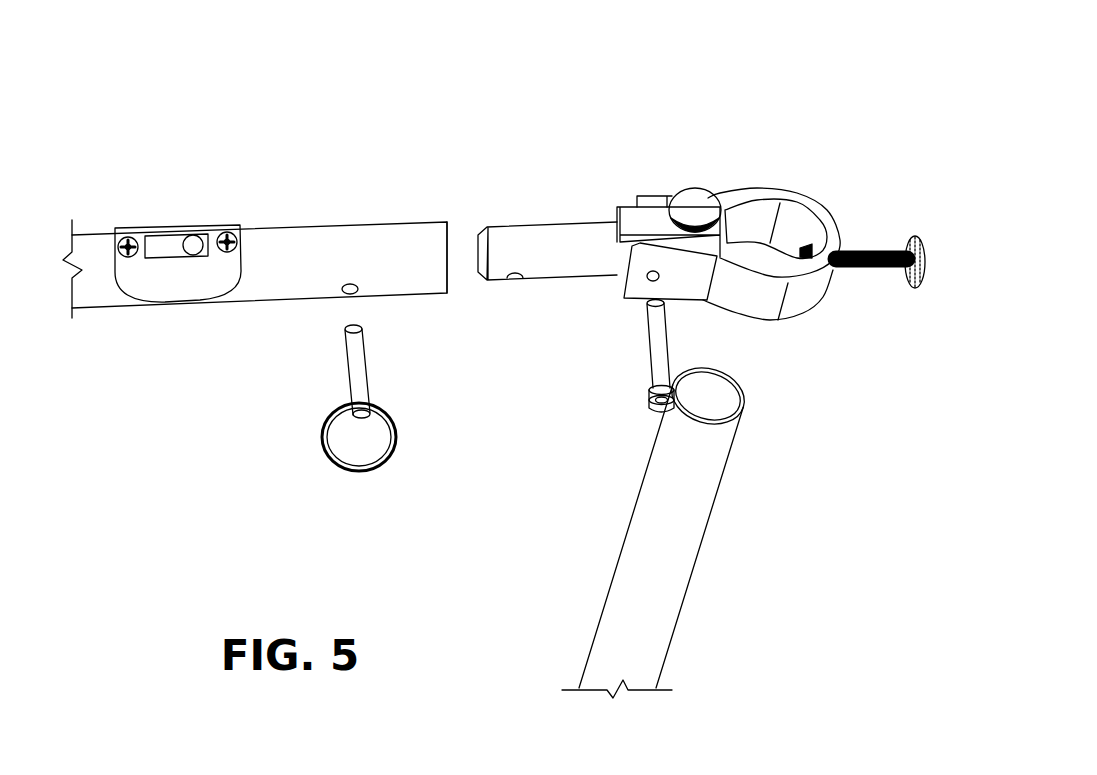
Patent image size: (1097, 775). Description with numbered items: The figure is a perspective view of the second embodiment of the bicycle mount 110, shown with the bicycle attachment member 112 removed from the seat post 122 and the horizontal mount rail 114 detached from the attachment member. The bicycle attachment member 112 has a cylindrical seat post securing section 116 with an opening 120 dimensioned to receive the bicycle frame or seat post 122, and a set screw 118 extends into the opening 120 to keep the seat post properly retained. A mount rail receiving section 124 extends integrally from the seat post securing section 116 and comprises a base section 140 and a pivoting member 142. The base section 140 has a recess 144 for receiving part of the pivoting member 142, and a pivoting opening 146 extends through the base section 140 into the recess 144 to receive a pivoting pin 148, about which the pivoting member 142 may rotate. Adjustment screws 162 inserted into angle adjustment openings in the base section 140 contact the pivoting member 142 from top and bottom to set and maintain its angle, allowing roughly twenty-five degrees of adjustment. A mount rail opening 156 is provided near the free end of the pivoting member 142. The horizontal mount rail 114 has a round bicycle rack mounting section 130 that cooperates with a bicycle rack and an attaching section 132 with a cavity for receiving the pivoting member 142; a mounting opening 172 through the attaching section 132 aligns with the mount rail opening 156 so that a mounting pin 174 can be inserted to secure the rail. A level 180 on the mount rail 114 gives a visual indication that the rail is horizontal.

The bicycle mount 110 is at (692, 103).
The bicycle attachment member 112 is at (832, 195).
The horizontal mount rail 114 is at (296, 222).
The seat post securing section 116 is at (775, 187).
The set screw 118 is at (920, 290).
The opening 120 is at (810, 230).
The seat post 122 is at (668, 593).
The mount rail receiving section 124 is at (651, 205).
The bicycle rack mounting section 130 is at (105, 318).
The attaching section 132 is at (378, 232).
The base section 140 is at (683, 300).
The pivoting member 142 is at (557, 232).
The recess 144 is at (640, 236).
The pivoting opening 146 is at (649, 280).
The pivoting pin 148 is at (649, 353).
The mount rail opening 156 is at (514, 282).
The adjustment screws 162 is at (702, 200).
The mounting opening 172 is at (350, 294).
The mounting pin 174 is at (367, 365).
The level 180 is at (170, 226).